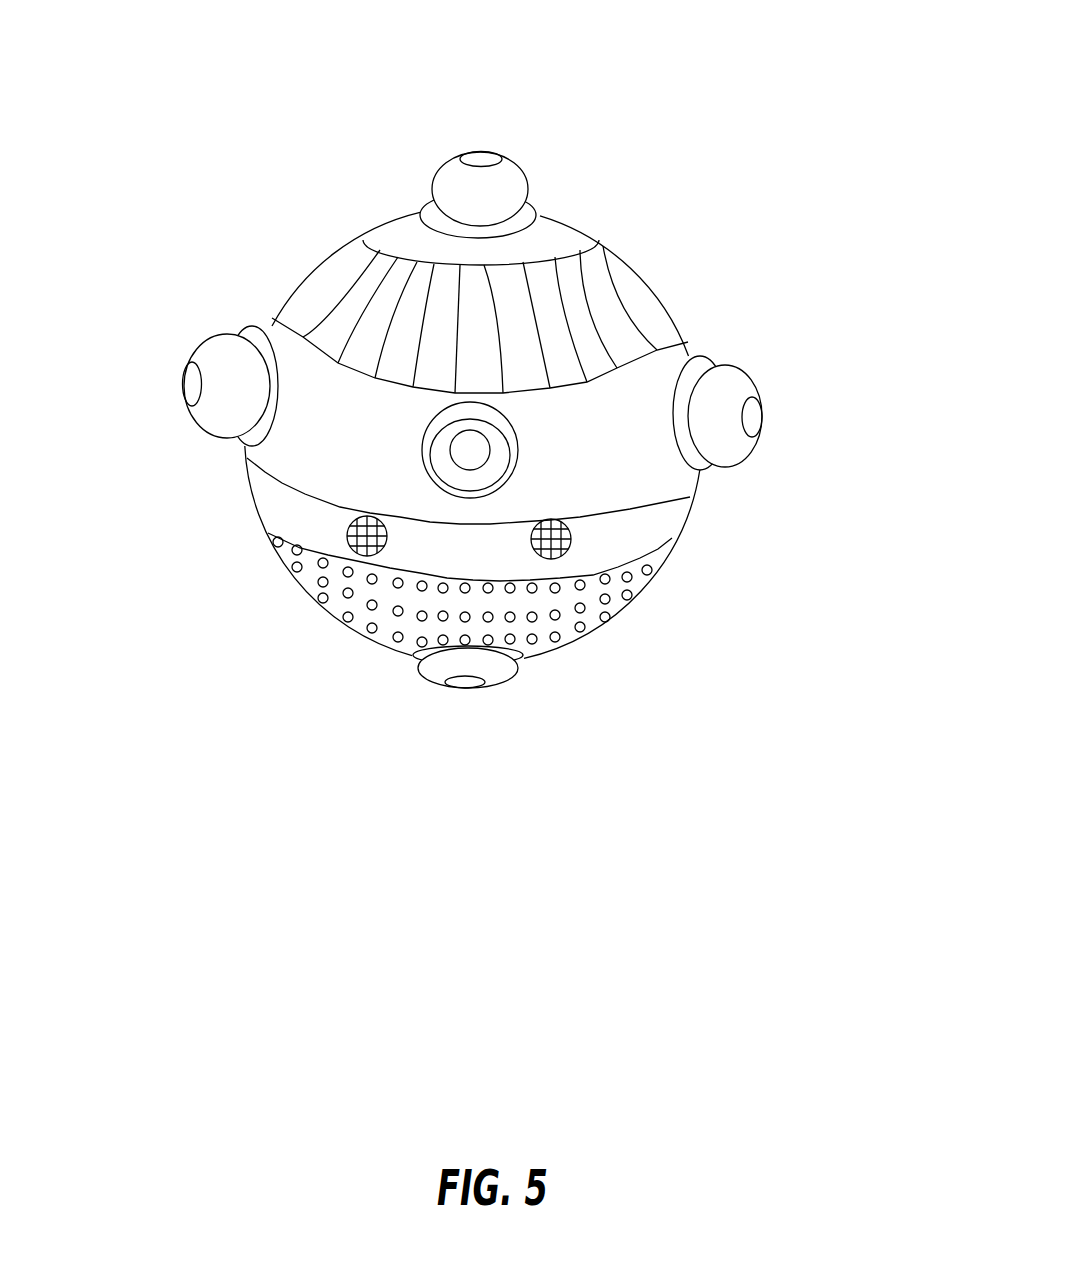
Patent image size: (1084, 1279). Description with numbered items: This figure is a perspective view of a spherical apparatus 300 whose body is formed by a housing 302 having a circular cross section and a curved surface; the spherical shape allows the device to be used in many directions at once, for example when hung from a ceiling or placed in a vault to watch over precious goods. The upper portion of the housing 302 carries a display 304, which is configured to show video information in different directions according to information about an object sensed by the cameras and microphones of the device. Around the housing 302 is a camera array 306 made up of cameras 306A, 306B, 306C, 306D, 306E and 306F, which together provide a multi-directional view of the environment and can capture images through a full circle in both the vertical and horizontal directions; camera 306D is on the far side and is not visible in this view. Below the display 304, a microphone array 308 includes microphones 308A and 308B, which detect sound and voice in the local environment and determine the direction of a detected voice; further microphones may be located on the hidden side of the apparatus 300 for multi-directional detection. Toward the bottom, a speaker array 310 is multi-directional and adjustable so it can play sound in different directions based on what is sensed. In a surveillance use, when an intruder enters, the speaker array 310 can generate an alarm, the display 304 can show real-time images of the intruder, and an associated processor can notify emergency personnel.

The spherical apparatus 300 is at (500, 388).
The housing 302 is at (632, 257).
The display 304 is at (613, 302).
The camera array 306 is at (500, 447).
The camera 306A is at (233, 355).
The camera 306B is at (420, 447).
The camera 306C is at (763, 410).
The camera 306D is at (277, 317).
The camera 306E is at (483, 192).
The camera 306F is at (493, 668).
The microphone array 308 is at (538, 519).
The microphone 308A is at (350, 533).
The microphone 308B is at (568, 527).
The speaker array 310 is at (583, 605).